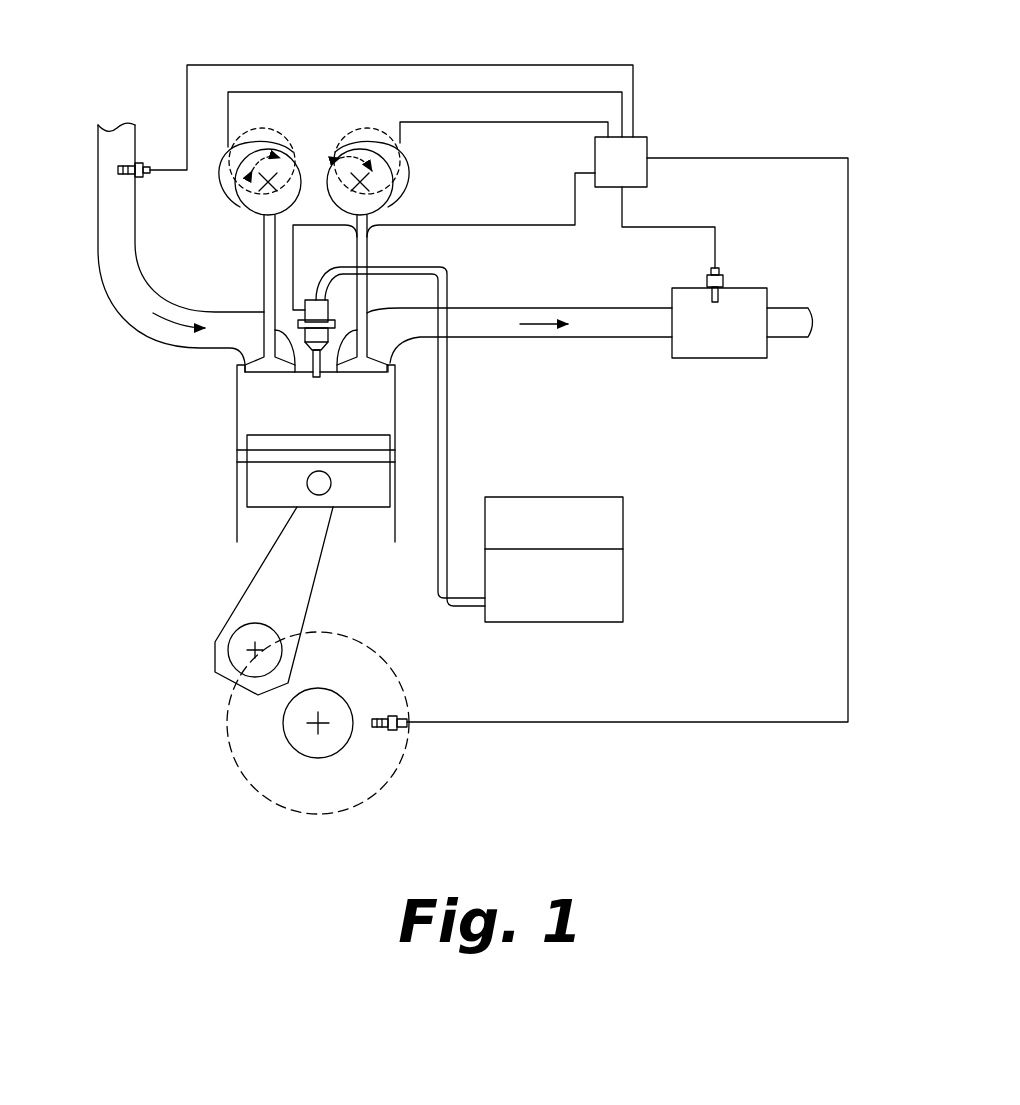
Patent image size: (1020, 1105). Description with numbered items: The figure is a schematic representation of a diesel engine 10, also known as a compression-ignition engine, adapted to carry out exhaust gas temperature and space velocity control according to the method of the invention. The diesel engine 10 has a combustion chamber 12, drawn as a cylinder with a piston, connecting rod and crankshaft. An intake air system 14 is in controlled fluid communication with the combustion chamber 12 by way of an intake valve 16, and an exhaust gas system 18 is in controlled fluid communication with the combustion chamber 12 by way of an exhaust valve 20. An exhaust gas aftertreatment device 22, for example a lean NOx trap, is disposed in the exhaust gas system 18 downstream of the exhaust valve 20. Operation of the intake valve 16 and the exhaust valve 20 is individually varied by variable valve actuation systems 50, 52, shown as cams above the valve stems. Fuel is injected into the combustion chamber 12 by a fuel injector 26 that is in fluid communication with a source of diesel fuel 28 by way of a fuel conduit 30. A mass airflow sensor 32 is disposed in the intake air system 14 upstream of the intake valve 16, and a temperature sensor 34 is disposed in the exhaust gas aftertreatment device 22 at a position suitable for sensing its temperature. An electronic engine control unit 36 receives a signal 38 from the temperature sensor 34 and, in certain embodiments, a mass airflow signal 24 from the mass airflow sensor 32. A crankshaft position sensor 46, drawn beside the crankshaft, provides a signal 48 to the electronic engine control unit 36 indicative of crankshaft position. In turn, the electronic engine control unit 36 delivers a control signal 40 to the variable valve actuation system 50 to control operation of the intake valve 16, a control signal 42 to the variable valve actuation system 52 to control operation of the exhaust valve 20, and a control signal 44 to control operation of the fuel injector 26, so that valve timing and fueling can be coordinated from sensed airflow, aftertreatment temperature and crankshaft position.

The diesel engine 10 is at (758, 96).
The combustion chamber 12 is at (304, 418).
The intake air system 14 is at (130, 338).
The intake valve 16 is at (262, 285).
The exhaust gas system 18 is at (567, 298).
The exhaust valve 20 is at (368, 298).
The exhaust gas aftertreatment device 22 is at (706, 338).
The mass airflow signal 24 is at (313, 65).
The fuel injector 26 is at (318, 310).
The source of diesel fuel 28 is at (525, 548).
The fuel conduit 30 is at (448, 478).
The mass airflow sensor 32 is at (140, 177).
The temperature sensor 34 is at (724, 282).
The electronic engine control unit 36 is at (609, 175).
The signal 38 is at (675, 225).
The control signal 40 is at (493, 92).
The control signal 42 is at (500, 122).
The control signal 44 is at (448, 223).
The crankshaft position sensor 46 is at (388, 718).
The signal 48 is at (846, 513).
The variable valve actuation system 50 is at (301, 144).
The variable valve actuation system 52 is at (425, 167).